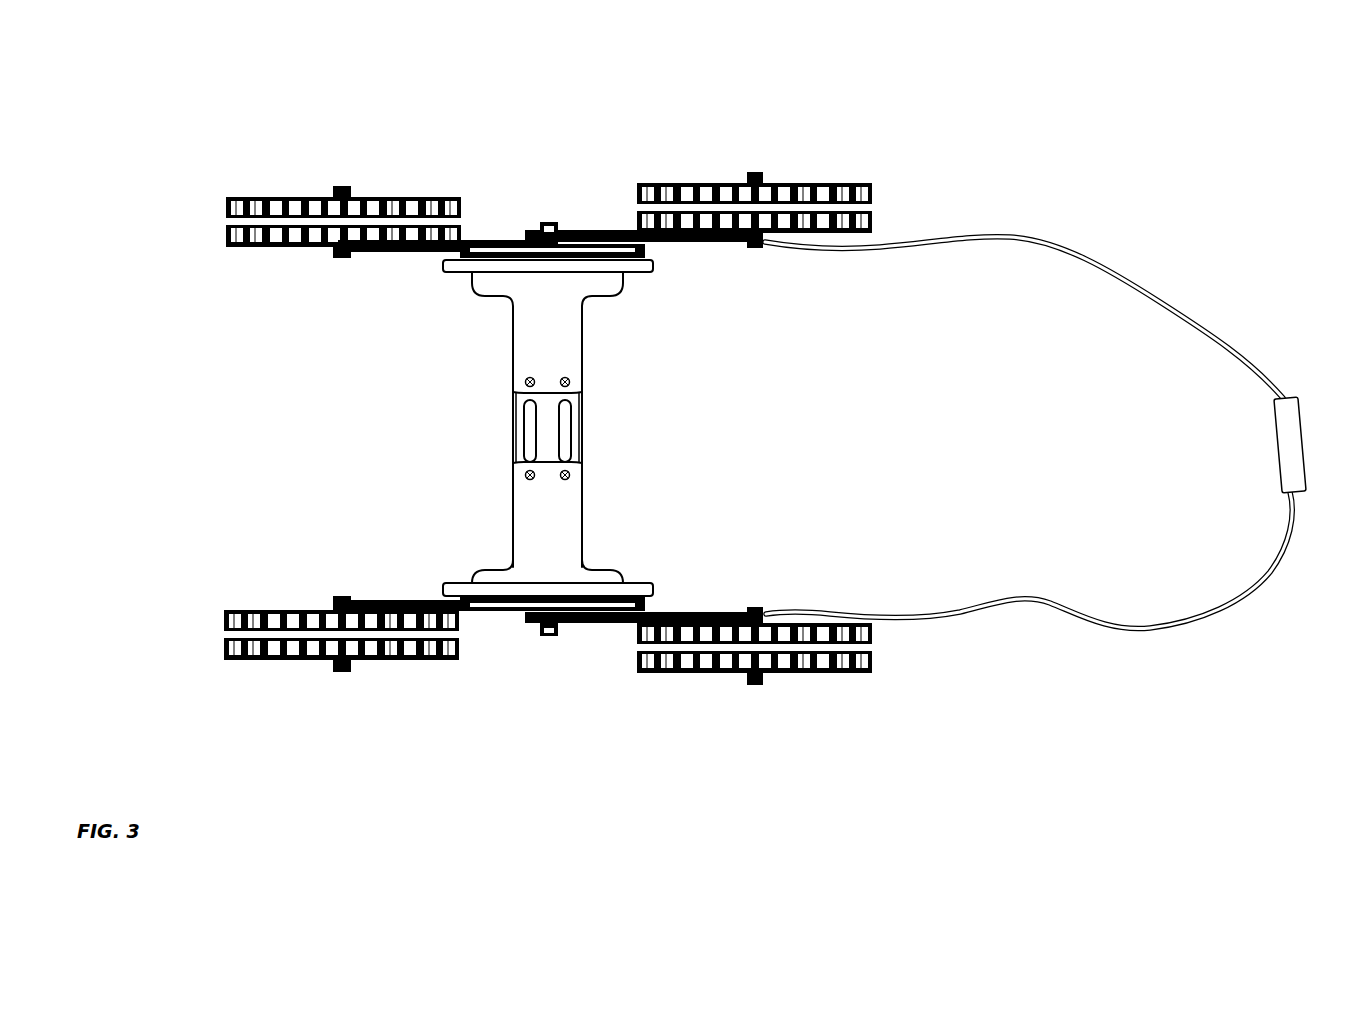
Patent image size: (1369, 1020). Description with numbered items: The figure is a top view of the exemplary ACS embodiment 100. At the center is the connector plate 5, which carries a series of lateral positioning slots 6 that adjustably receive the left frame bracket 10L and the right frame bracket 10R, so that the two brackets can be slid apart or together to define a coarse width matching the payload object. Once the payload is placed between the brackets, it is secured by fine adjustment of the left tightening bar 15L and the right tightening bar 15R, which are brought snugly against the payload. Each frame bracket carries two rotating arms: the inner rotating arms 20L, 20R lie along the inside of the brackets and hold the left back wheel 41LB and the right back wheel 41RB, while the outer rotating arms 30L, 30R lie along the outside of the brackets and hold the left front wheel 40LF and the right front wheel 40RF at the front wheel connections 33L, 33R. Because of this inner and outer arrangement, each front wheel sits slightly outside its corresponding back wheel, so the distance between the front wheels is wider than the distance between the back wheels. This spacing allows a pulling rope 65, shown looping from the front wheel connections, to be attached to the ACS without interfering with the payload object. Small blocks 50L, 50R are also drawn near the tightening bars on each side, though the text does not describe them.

The ACS exemplary embodiment 100 is at (1241, 92).
The connector plate 5 is at (588, 443).
The lateral positioning slots 6 is at (513, 420).
The right frame bracket 10R is at (572, 333).
The left frame bracket 10L is at (520, 502).
The right tightening bar 15R is at (645, 272).
The left tightening bar 15L is at (645, 583).
The right inner rotating arm 20R is at (396, 255).
The left inner rotating arm 20L is at (396, 600).
The right outer rotating arm 30R is at (582, 232).
The left outer rotating arm 30L is at (590, 640).
The right front wheel connection 33R is at (760, 250).
The left front wheel connection 33L is at (760, 607).
The right front wheel 40RF is at (806, 183).
The left front wheel 40LF is at (806, 673).
The right back wheel 41RB is at (296, 190).
The left back wheel 41LB is at (302, 655).
The right pivot block 50R is at (546, 222).
The left pivot block 50L is at (546, 637).
The pulling rope 65 is at (1050, 600).